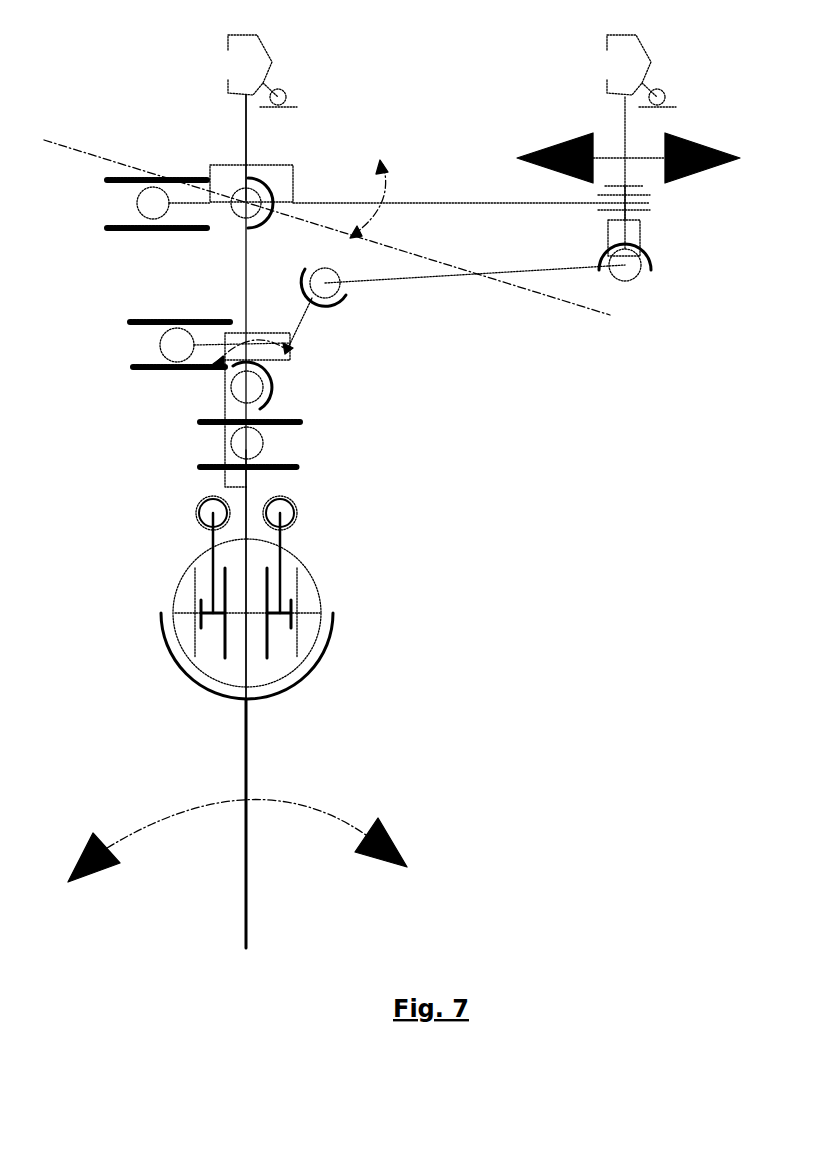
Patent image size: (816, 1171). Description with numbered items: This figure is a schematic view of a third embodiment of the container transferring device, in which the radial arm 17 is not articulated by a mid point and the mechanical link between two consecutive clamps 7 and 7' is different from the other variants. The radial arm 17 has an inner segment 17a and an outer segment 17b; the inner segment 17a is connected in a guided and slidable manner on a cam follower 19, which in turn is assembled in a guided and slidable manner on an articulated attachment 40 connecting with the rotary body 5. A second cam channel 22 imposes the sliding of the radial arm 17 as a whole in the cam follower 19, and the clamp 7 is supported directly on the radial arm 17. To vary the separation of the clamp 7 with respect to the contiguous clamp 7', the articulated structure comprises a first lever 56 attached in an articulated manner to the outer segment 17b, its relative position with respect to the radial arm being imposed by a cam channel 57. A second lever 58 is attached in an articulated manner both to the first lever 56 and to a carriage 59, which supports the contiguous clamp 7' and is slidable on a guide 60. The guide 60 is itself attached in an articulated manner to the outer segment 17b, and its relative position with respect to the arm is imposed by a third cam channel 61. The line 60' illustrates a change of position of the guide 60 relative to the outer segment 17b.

The rotary body 5 is at (246, 738).
The clamp 7 is at (264, 53).
The contiguous clamp 7' is at (628, 125).
The radial arm 17 is at (240, 266).
The inner segment 17a is at (246, 492).
The outer segment 17b is at (246, 120).
The cam follower 19 is at (299, 517).
The second cam channel 22 is at (270, 462).
The articulated attachment 40 is at (330, 650).
The first lever 56 is at (302, 327).
The second cam channel 57 is at (147, 370).
The second lever 58 is at (437, 278).
The carriage 59 is at (648, 210).
The guide 60 is at (430, 190).
The line 60' is at (327, 248).
The third cam channel 61 is at (118, 225).